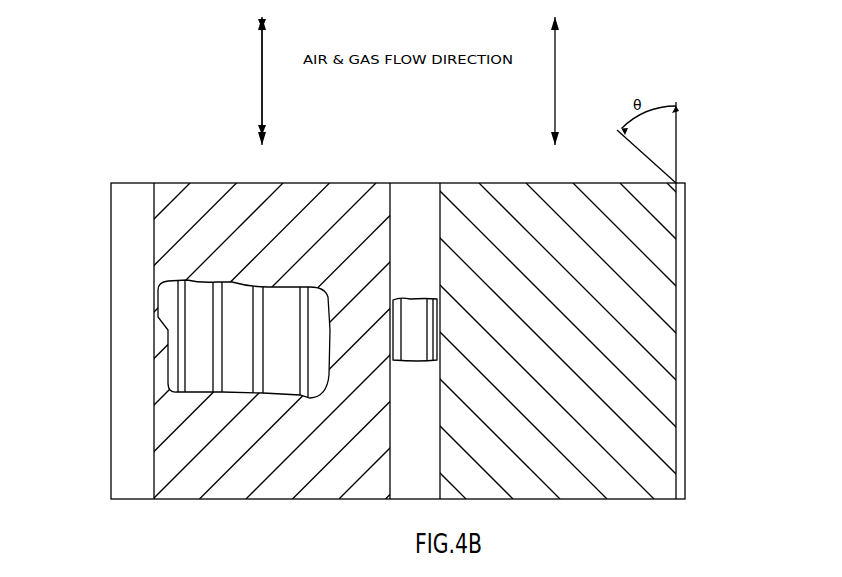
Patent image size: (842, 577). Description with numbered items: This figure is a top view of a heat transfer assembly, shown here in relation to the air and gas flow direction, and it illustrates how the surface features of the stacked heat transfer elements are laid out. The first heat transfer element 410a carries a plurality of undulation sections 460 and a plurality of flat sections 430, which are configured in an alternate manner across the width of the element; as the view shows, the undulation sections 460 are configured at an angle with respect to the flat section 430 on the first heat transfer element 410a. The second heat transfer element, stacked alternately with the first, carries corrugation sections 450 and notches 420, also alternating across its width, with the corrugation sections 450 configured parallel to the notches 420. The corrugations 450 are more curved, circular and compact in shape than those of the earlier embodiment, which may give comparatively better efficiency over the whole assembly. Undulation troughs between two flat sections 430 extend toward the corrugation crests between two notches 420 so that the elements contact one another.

The first heat transfer element 410a is at (684, 180).
The notch 420 is at (435, 334).
The flat section 430 is at (128, 334).
The corrugation section 450 is at (207, 361).
The undulation section 460 is at (184, 238).